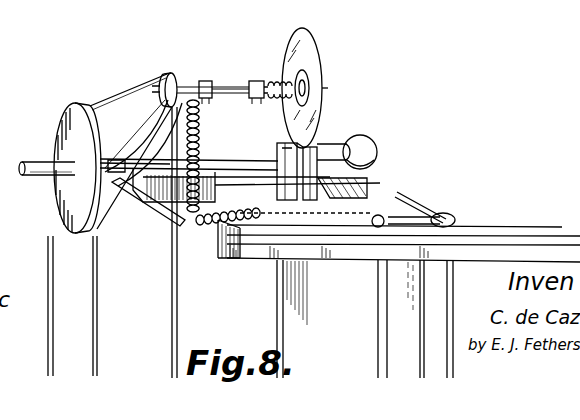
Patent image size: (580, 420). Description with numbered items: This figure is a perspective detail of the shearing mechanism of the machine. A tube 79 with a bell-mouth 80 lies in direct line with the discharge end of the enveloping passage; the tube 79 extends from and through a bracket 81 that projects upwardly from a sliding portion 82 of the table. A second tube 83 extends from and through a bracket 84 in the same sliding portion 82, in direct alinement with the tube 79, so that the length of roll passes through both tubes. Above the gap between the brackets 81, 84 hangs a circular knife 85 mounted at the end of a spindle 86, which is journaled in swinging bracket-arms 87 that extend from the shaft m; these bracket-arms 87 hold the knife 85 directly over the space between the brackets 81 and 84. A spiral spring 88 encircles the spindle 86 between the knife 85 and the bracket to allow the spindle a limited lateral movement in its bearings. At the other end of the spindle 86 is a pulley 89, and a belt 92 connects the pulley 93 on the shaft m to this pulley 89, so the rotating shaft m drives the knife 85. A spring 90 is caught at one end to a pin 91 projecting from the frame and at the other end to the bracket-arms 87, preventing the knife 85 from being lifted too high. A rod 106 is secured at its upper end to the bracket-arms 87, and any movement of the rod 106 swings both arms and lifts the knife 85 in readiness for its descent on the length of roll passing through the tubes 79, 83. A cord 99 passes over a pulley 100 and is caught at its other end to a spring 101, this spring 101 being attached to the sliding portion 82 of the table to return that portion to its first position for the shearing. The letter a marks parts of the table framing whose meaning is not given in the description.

The tube 79 is at (337, 142).
The bell-mouth 80 is at (370, 142).
The bracket 81 is at (360, 161).
The sliding portion of the table 82 is at (453, 161).
The tube 83 is at (240, 159).
The bracket 84 is at (272, 153).
The circular knife 85 is at (310, 53).
The spindle 86 is at (222, 84).
The swinging bracket-arms 87 is at (201, 81).
The spiral spring 88 is at (279, 80).
The pulley 89 is at (170, 72).
The spring 90 is at (202, 137).
The pin 91 is at (170, 205).
The belt 92 is at (116, 90).
The pulley 93 is at (72, 127).
The cord 99 is at (454, 298).
The pulley 100 is at (458, 216).
The spring 101 is at (207, 232).
The rod 106 is at (178, 312).
The shaft m is at (40, 163).
The leg a is at (350, 337).